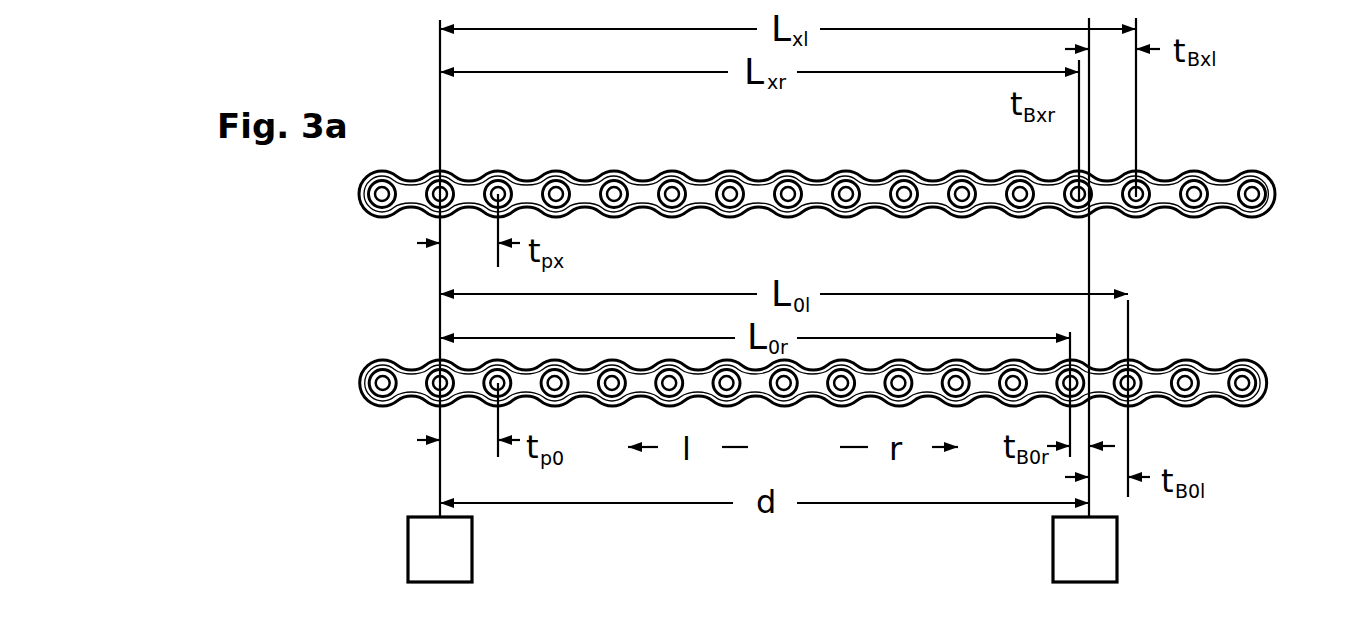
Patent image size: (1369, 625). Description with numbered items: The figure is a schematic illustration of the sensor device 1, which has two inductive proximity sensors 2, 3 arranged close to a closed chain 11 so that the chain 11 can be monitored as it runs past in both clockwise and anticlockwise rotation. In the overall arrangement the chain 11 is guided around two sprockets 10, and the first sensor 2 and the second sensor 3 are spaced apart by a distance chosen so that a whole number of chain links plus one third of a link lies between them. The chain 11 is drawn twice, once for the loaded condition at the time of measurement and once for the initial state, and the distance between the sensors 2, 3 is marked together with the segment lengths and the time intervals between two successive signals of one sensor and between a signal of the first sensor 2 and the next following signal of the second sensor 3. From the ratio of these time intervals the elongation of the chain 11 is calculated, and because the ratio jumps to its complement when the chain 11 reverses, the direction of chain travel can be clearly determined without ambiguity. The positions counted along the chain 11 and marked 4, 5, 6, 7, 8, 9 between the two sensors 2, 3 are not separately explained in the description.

The sensor device 1 is at (453, 171).
The inductive proximity sensor 2 is at (473, 301).
The inductive proximity sensor 3 is at (830, 300).
The chain link 4 is at (627, 171).
The chain link 5 is at (685, 171).
The chain link 6 is at (743, 171).
The chain link 7 is at (801, 171).
The chain link 8 is at (859, 171).
The chain link 9 is at (917, 171).
The sprocket 10 is at (981, 171).
The chain 11 is at (1078, 171).